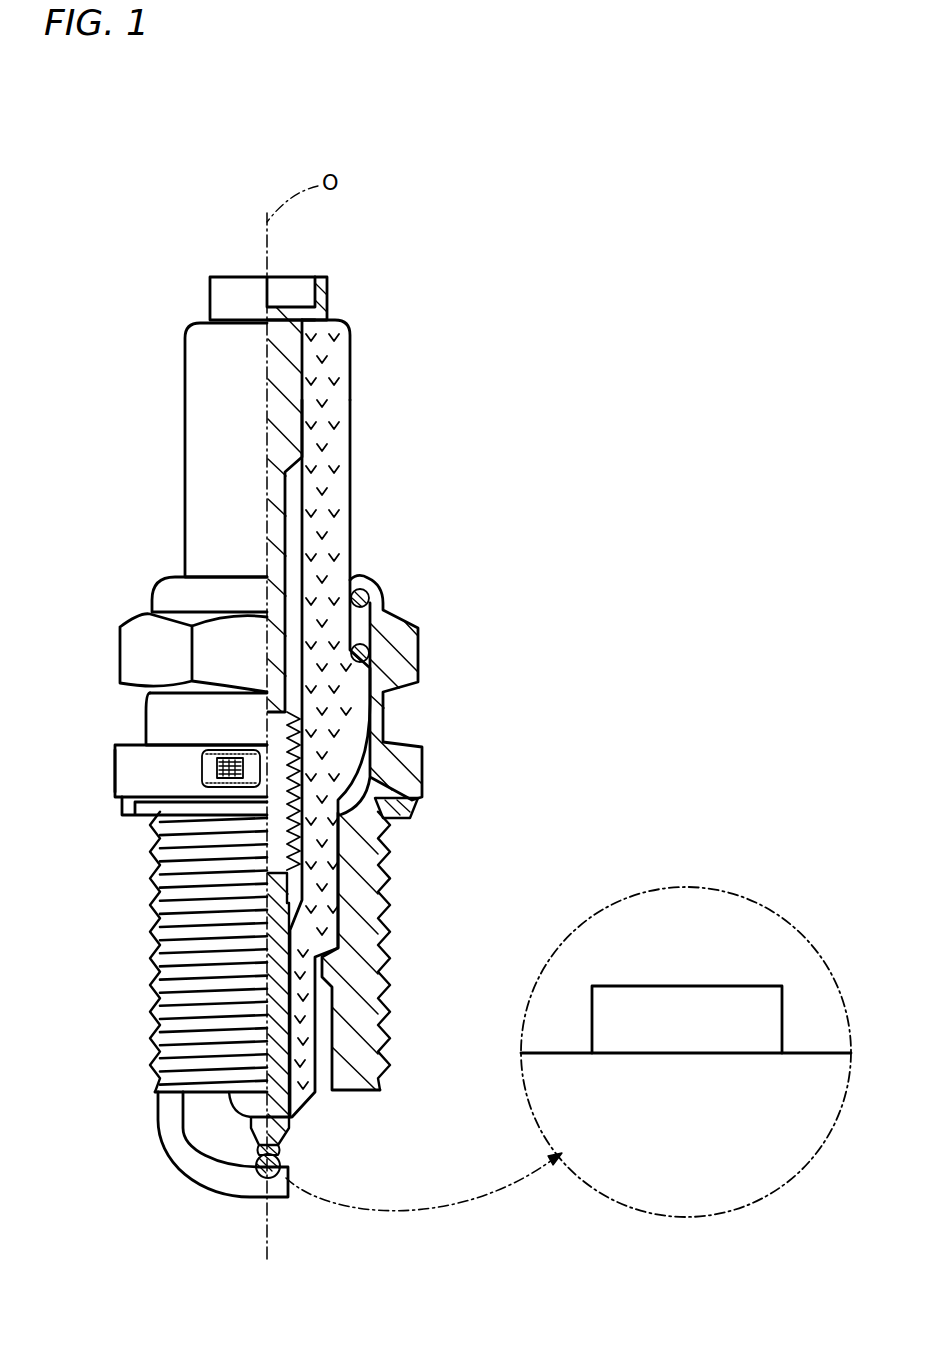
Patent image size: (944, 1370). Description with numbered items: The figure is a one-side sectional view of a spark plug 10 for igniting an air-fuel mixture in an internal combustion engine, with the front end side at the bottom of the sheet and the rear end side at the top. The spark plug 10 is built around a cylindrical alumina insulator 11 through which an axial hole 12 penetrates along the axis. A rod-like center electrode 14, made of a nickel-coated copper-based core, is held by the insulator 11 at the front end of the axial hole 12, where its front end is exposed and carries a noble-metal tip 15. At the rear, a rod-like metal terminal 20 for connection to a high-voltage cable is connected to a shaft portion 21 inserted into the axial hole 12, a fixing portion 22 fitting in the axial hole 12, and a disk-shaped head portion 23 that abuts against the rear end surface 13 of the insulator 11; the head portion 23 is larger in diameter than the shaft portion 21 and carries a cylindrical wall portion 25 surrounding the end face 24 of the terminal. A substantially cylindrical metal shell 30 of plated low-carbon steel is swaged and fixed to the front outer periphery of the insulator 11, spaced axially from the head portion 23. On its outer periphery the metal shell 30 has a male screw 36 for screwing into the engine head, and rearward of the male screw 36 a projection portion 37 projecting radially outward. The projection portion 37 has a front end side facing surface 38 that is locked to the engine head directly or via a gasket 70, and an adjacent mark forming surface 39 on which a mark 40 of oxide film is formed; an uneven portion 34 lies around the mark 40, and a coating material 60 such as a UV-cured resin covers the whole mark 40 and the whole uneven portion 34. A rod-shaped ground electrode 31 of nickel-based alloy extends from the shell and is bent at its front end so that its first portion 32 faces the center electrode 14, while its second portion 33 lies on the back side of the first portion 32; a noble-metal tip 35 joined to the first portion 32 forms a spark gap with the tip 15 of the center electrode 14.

The spark plug 10 is at (448, 195).
The metal terminal 20 is at (206, 243).
The rear end surface 13 is at (203, 320).
The end face 24 is at (290, 305).
The cylindrical wall portion 25 is at (318, 283).
The head portion 23 is at (306, 318).
The axial hole 12 is at (300, 350).
The fixing portion 22 is at (290, 440).
The shaft portion 21 is at (277, 487).
The insulator 11 is at (340, 520).
The metal shell 30 is at (177, 718).
The uneven portion 34 is at (223, 750).
The projection portion 37 is at (145, 758).
The mark forming surface 39 is at (147, 775).
The mark 40 is at (197, 768).
The coating material 60 is at (253, 767).
The front end side facing surface 38 is at (143, 799).
The gasket 70 is at (400, 815).
The male screw 36 is at (150, 910).
The center electrode 14 is at (273, 1125).
The tip 15 is at (277, 1152).
The ground electrode 31 is at (197, 1190).
The second portion 33 is at (277, 1196).
The tip 35 is at (683, 1000).
The first portion 32 is at (797, 1050).